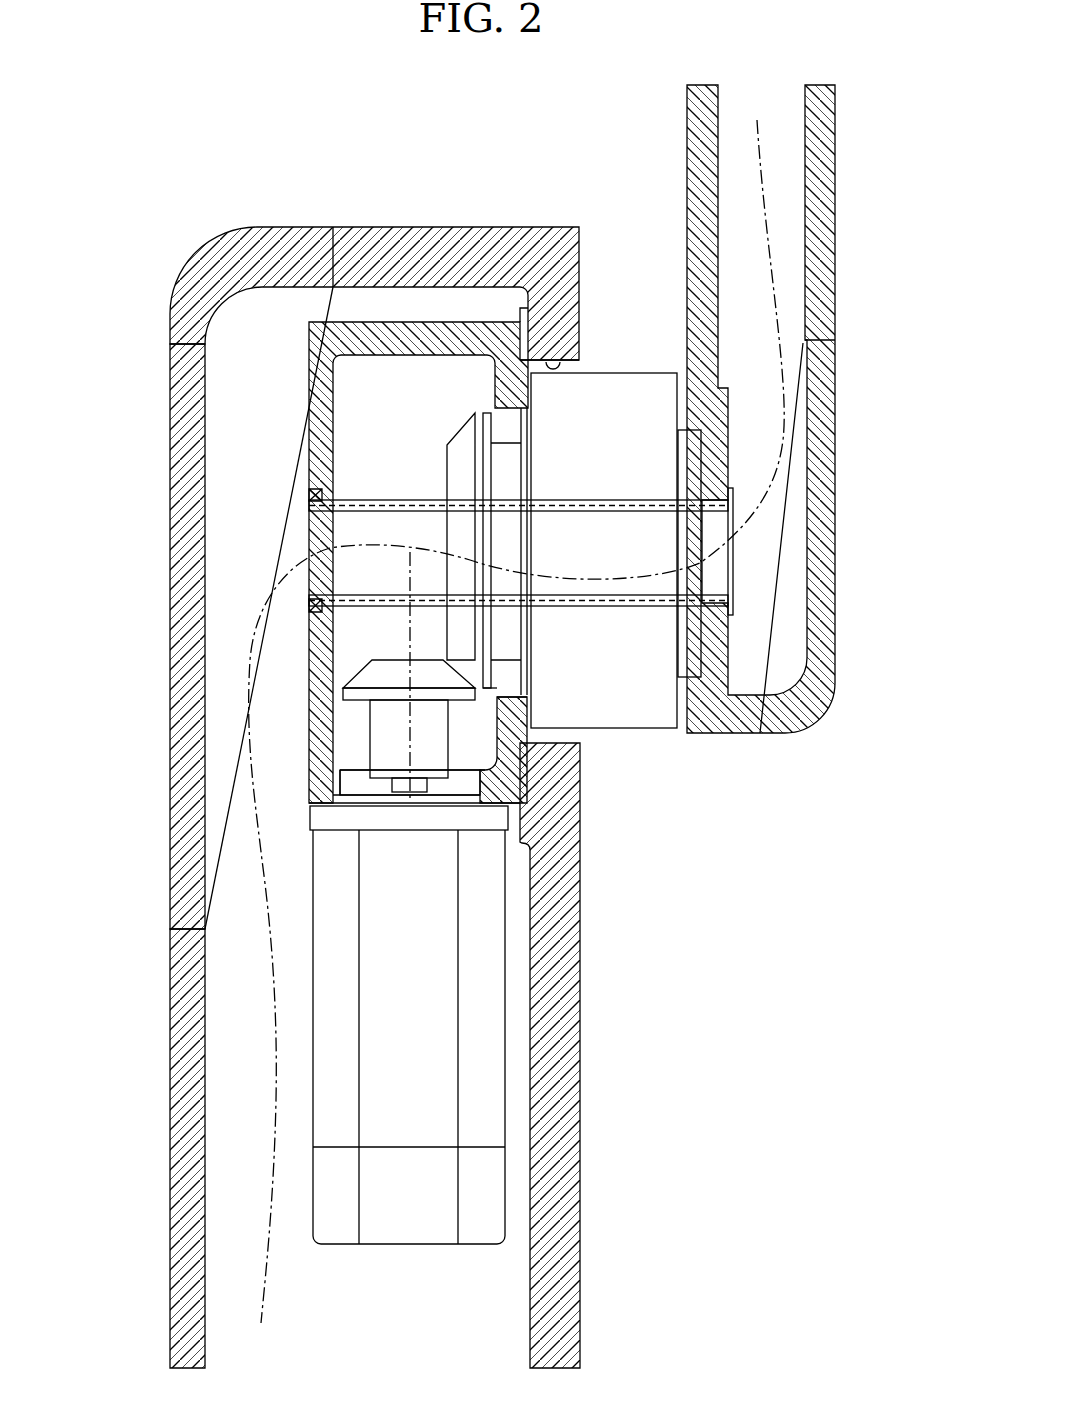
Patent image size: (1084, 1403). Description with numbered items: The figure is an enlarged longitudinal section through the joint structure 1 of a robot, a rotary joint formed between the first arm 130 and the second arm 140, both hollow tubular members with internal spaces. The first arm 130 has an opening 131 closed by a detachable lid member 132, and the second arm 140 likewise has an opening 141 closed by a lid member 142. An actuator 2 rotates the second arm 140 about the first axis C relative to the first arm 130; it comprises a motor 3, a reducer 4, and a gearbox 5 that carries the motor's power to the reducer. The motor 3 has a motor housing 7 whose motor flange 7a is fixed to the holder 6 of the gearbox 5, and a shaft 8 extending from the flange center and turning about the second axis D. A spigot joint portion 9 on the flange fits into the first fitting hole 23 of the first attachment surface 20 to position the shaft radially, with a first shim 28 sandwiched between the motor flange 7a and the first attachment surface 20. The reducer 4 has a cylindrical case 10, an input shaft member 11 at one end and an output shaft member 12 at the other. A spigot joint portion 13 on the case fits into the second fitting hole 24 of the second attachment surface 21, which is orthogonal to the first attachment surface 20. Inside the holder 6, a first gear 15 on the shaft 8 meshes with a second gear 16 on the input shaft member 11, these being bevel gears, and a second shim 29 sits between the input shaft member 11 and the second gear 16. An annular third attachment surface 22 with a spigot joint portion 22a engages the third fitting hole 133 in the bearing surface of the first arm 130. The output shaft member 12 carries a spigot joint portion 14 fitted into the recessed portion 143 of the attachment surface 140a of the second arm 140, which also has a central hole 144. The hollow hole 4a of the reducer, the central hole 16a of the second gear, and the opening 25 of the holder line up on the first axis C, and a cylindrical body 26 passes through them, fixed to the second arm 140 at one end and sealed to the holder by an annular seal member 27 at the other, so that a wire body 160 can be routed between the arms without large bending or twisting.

The joint structure 1 is at (109, 179).
The actuator 2 is at (206, 402).
The motor 3 is at (528, 1073).
The reducer 4 is at (642, 313).
The hollow hole 4a is at (570, 515).
The gearbox 5 is at (265, 373).
The holder 6 is at (285, 452).
The motor housing 7 is at (530, 962).
The motor flange 7a is at (348, 805).
The shaft 8 is at (432, 788).
The spigot joint portion 9 is at (348, 790).
The case 10 is at (609, 350).
The input shaft member 11 is at (499, 408).
The output shaft member 12 is at (726, 459).
The spigot joint portion 13 is at (528, 397).
The spigot joint portion 14 is at (684, 413).
The first gear 15 is at (372, 672).
The second gear 16 is at (447, 445).
The central hole 16a is at (462, 508).
The first attachment surface 20 is at (495, 808).
The second attachment surface 21 is at (533, 708).
The third attachment surface 22 is at (522, 772).
The spigot joint portion 22a is at (523, 303).
The first fitting hole 23 is at (347, 806).
The second fitting hole 24 is at (507, 690).
The opening 25 is at (322, 604).
The cylindrical body 26 is at (352, 500).
The annular seal member 27 is at (309, 496).
The first shim 28 is at (382, 806).
The second shim 29 is at (485, 626).
The first arm 130 is at (148, 1125).
The opening 131 is at (188, 922).
The lid member 132 is at (170, 620).
The third fitting hole 133 is at (553, 362).
The second arm 140 is at (857, 200).
The attachment surface 140a is at (700, 457).
The opening 141 is at (832, 342).
The lid member 142 is at (835, 510).
The recessed portion 143 is at (700, 680).
The central hole 144 is at (735, 595).
The wire body 160 is at (262, 995).
The first axis C is at (612, 550).
The second axis D is at (412, 806).